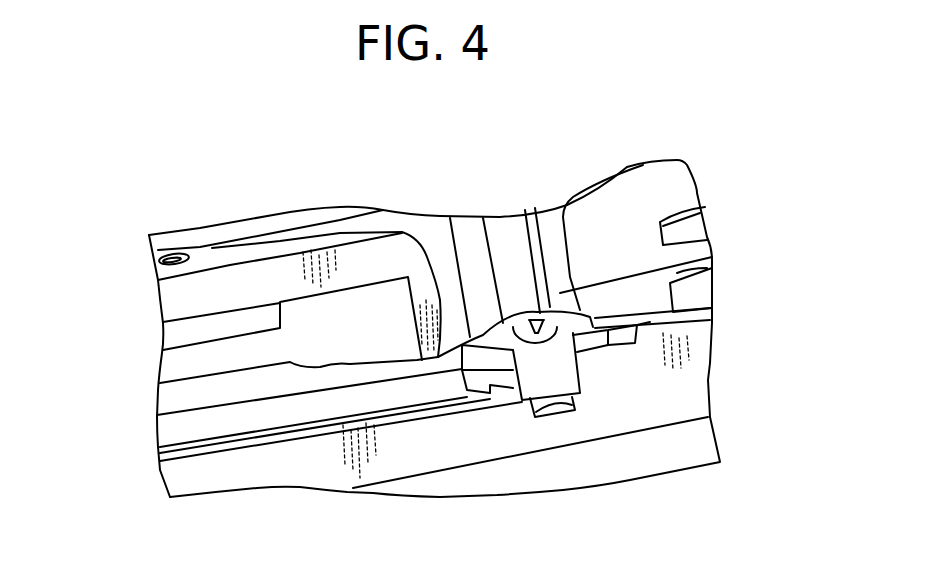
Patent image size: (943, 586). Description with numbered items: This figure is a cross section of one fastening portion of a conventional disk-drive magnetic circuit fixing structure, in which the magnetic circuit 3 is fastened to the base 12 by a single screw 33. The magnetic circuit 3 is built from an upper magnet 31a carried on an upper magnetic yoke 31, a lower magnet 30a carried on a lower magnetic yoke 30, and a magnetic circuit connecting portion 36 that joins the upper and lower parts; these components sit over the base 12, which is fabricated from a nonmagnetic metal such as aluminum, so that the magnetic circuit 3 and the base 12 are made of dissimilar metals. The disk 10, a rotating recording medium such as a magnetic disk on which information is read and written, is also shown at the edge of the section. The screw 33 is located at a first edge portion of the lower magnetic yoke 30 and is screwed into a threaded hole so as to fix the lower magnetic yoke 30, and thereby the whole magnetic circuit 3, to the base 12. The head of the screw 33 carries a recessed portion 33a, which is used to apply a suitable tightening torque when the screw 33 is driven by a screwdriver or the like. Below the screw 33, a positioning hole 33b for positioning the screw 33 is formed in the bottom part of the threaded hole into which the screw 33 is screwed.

The magnetic circuit 3 is at (305, 203).
The disk 10 is at (693, 228).
The base 12 is at (465, 430).
The lower magnetic yoke 30 is at (200, 425).
The lower magnet 30a is at (185, 399).
The upper magnetic yoke 31 is at (190, 297).
The upper magnet 31a is at (183, 337).
The screw 33 is at (560, 377).
The recessed portion 33a is at (540, 320).
The positioning hole 33b is at (573, 400).
The magnetic circuit connecting portion 36 is at (423, 290).